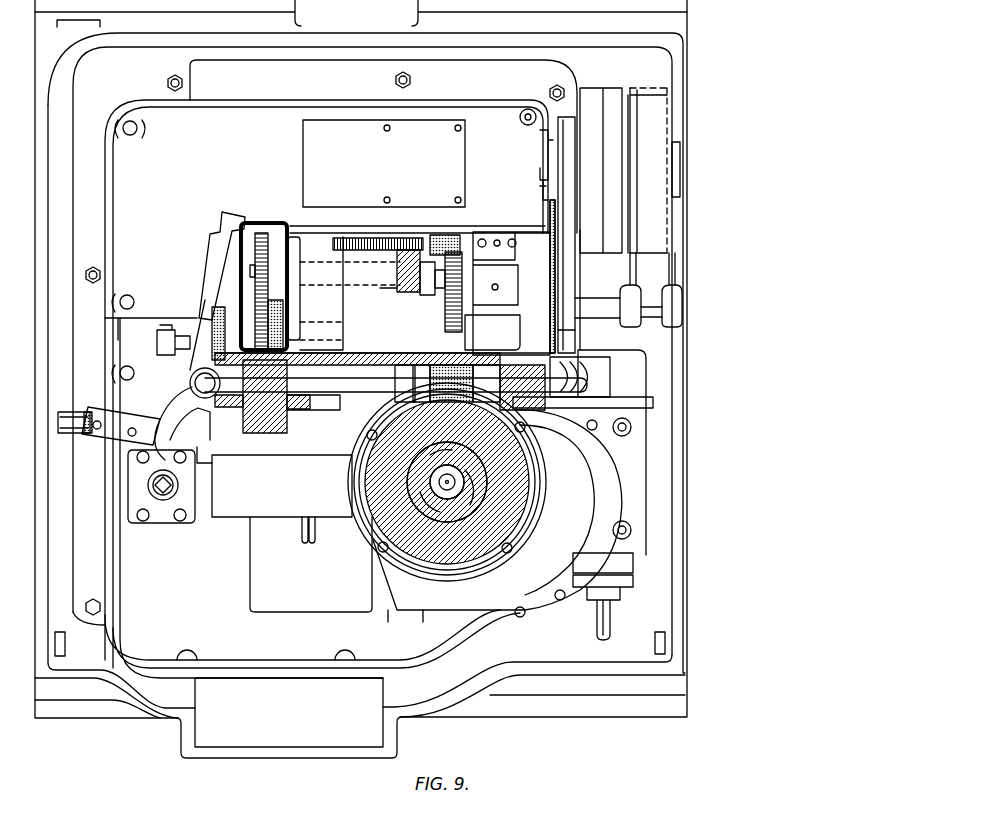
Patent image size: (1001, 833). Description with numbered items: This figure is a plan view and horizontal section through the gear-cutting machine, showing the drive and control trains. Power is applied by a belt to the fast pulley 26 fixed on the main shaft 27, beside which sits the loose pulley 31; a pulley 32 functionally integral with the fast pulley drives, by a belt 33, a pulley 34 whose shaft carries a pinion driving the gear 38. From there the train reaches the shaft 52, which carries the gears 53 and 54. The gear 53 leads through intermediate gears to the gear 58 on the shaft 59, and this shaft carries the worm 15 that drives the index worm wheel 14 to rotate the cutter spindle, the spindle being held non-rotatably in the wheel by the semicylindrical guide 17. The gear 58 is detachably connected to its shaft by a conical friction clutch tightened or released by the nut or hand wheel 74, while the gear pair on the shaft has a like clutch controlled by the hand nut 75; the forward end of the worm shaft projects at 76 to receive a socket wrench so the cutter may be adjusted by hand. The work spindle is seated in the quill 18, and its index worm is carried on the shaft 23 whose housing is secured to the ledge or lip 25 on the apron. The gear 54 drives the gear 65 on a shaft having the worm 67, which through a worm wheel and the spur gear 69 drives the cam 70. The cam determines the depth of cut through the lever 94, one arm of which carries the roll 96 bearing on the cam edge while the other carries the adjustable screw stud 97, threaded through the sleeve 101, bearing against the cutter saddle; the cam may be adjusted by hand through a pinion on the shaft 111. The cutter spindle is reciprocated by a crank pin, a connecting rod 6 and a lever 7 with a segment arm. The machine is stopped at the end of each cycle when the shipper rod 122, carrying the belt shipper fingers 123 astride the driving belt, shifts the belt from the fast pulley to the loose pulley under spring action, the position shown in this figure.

The connecting rod 6 is at (148, 485).
The lever 7 is at (202, 525).
The index worm wheel 14 is at (368, 485).
The worm 15 is at (482, 355).
The semicylindrical guide 17 is at (368, 532).
The quill 18 is at (395, 458).
The shaft 23 is at (614, 608).
The ledge or lip 25 is at (628, 490).
The pulley 26 is at (612, 100).
The main shaft 27 is at (545, 183).
The loose pulley 31 is at (640, 98).
The pulley 32 is at (552, 135).
The belt 33 is at (570, 274).
The pulley 34 is at (578, 333).
The gear 38 is at (450, 310).
The shaft 52 is at (392, 288).
The gear 53 is at (292, 300).
The gear 54 is at (257, 327).
The gear 58 is at (265, 397).
The shaft 59 is at (338, 395).
The gear 65 is at (258, 222).
The worm 67 is at (418, 290).
The spur gear 69 is at (445, 238).
The cam 70 is at (292, 233).
The nut or hand wheel 74 is at (230, 423).
The hand nut 75 is at (212, 310).
The forward end of worm shaft 76 is at (600, 372).
The lever 94 is at (205, 284).
The roll 96 is at (215, 232).
The adjustable screw stud 97 is at (93, 412).
The sleeve 101 is at (124, 422).
The shaft 111 is at (300, 530).
The shipper rod 122 is at (592, 312).
The belt shipper fingers 123 is at (672, 262).